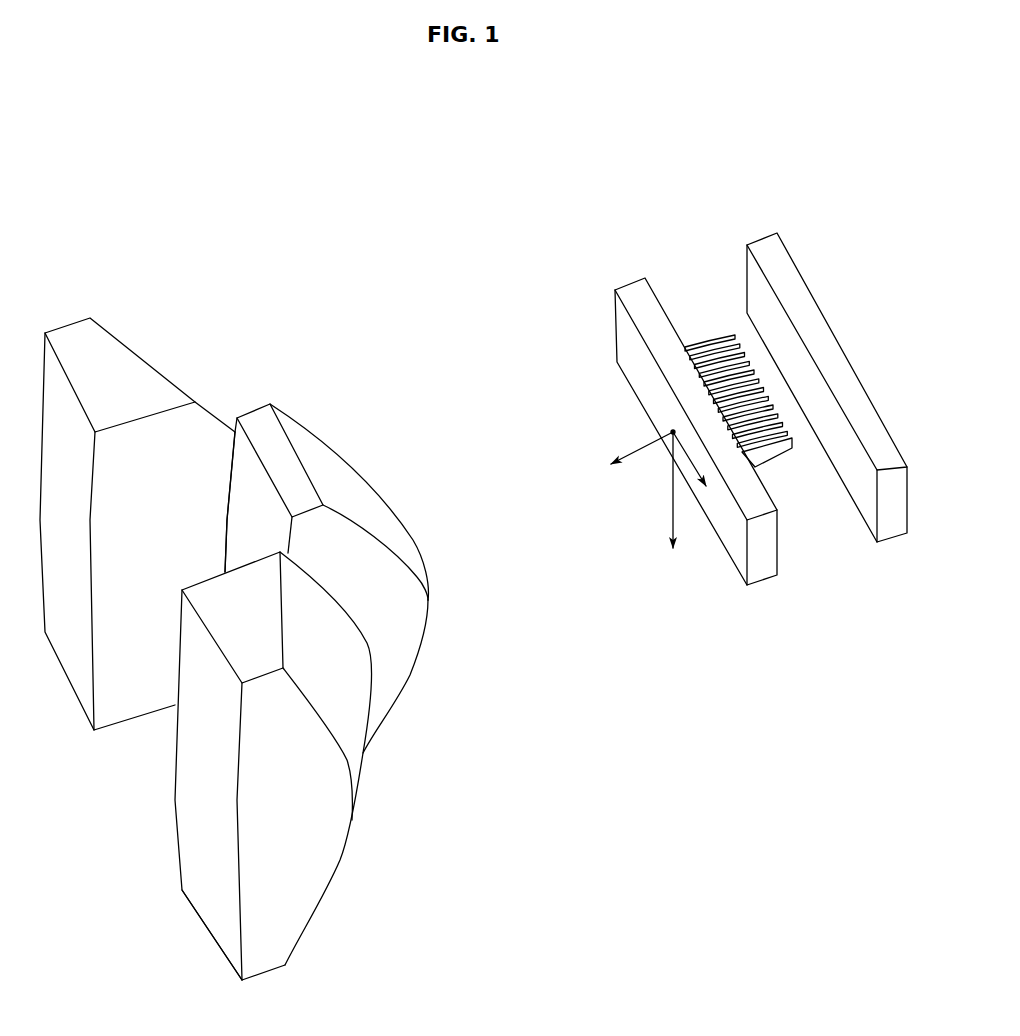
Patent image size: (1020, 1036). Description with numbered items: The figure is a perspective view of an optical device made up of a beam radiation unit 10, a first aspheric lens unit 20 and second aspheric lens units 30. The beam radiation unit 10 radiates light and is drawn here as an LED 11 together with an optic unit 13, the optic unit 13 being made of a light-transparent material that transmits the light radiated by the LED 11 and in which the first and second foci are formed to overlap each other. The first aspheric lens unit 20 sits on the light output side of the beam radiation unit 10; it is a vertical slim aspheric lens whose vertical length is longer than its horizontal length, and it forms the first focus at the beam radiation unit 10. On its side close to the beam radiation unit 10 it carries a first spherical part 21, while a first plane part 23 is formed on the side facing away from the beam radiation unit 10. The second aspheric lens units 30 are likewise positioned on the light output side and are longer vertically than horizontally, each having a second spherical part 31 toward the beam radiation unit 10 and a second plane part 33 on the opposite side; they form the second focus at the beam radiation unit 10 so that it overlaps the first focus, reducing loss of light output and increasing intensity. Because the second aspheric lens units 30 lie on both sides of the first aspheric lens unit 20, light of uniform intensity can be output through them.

The beam radiation unit 10 is at (759, 359).
The LED 11 is at (757, 238).
The optic unit 13 is at (702, 331).
The first aspheric lens unit 20 is at (346, 440).
The first spherical part 21 is at (377, 513).
The first plane part 23 is at (245, 502).
The second aspheric lens unit 30 is at (181, 344).
The second spherical part 31 is at (348, 690).
The second plane part 33 is at (208, 902).